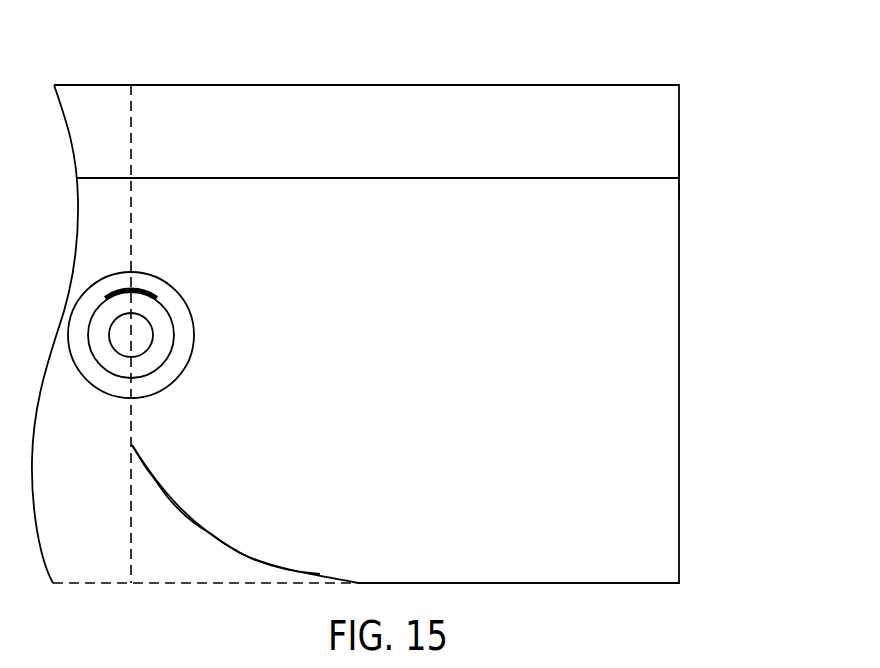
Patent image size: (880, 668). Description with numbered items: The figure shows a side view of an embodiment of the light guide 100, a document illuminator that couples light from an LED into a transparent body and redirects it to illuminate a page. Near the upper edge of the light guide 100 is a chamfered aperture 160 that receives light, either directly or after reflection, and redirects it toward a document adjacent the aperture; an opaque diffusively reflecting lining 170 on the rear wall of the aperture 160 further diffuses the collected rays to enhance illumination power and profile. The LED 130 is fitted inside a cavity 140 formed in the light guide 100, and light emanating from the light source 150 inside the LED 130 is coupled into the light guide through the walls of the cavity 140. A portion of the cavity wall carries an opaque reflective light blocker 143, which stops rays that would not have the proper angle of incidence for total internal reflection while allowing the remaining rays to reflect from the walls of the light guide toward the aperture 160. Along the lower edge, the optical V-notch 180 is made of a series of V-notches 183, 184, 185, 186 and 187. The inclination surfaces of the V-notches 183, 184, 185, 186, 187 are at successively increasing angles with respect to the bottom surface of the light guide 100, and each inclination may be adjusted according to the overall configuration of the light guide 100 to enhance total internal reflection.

The light guide 100 is at (512, 62).
The chamfered aperture 160 is at (567, 100).
The diffusively reflecting lining 170 is at (679, 148).
The LED 130 is at (162, 339).
The cavity 140 is at (172, 375).
The light source 150 is at (140, 333).
The light blocker 143 is at (147, 294).
The optical V-notch 180 is at (283, 482).
The V-notch 183 is at (148, 471).
The V-notch 184 is at (168, 500).
The V-notch 185 is at (207, 533).
The V-notch 186 is at (245, 557).
The V-notch 187 is at (317, 573).